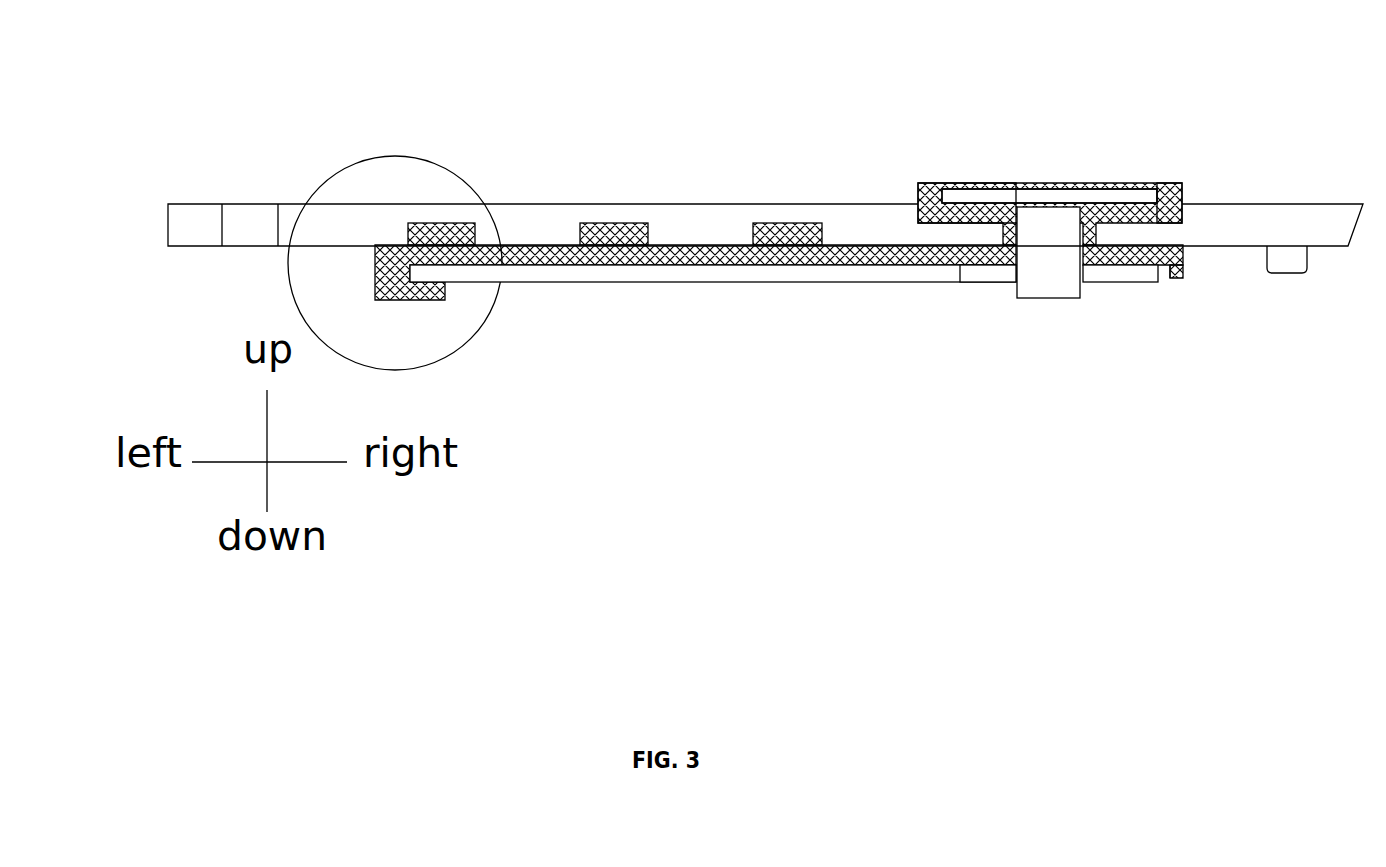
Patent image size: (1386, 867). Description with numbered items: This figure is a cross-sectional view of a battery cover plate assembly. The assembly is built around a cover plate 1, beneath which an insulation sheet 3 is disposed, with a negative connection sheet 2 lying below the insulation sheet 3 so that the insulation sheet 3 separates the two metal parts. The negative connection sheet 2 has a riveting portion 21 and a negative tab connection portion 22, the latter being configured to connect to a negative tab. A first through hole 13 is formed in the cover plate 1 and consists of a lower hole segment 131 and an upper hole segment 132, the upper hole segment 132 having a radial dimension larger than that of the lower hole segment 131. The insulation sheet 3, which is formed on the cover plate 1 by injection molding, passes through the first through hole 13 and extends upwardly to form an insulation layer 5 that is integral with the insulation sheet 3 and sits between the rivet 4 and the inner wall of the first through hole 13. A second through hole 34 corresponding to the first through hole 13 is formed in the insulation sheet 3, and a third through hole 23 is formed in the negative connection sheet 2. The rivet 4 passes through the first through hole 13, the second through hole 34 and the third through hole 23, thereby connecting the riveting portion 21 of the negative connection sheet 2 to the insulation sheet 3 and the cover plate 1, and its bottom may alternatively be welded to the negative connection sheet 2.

The cover plate 1 is at (1237, 223).
The negative connection sheet 2 is at (784, 359).
The insulation sheet 3 is at (835, 321).
The rivet 4 is at (1045, 278).
The insulation layer 5 is at (1182, 185).
The first through hole 13 is at (1031, 139).
The lower hole segment 131 is at (985, 203).
The upper hole segment 132 is at (915, 203).
The riveting portion 21 is at (990, 282).
The negative tab connection portion 22 is at (598, 268).
The third through hole 23 is at (1088, 287).
The second through hole 34 is at (1107, 280).